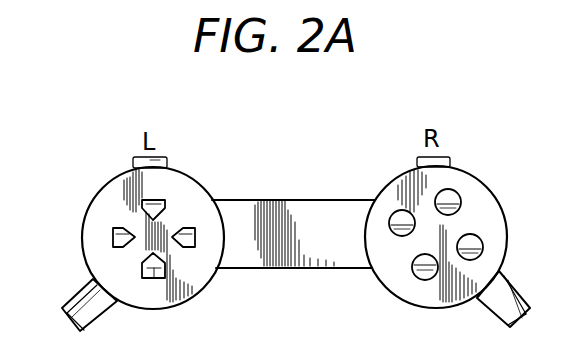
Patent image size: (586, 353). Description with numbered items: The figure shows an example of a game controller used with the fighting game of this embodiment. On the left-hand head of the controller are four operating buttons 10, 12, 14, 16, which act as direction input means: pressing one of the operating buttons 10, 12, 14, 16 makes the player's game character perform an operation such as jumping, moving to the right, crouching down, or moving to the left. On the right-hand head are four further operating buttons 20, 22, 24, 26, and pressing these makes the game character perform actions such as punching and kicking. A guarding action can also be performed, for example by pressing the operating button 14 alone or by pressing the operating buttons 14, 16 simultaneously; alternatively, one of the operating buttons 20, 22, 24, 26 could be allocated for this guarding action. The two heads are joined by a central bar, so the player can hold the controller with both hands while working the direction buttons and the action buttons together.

The operating button 10 is at (162, 197).
The operating button 12 is at (186, 226).
The operating button 14 is at (151, 279).
The operating button 16 is at (114, 228).
The operating button 20 is at (447, 203).
The operating button 22 is at (470, 247).
The operating button 24 is at (422, 268).
The operating button 26 is at (402, 222).